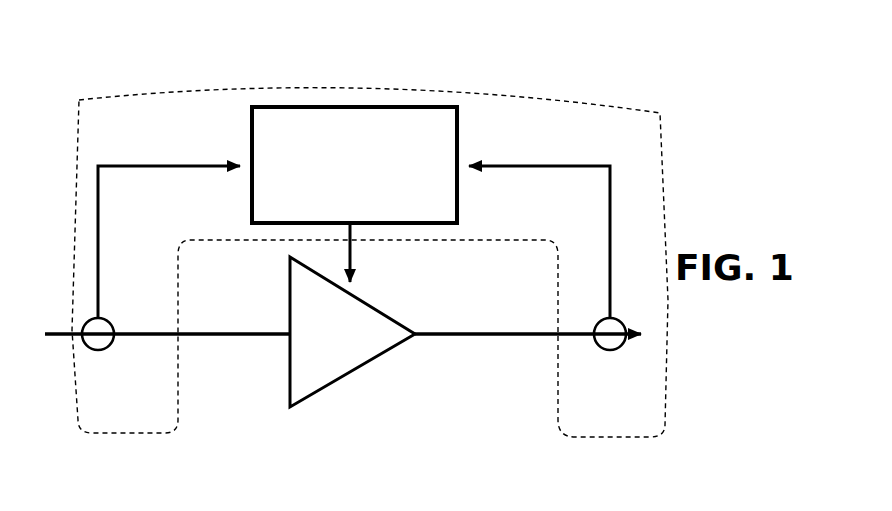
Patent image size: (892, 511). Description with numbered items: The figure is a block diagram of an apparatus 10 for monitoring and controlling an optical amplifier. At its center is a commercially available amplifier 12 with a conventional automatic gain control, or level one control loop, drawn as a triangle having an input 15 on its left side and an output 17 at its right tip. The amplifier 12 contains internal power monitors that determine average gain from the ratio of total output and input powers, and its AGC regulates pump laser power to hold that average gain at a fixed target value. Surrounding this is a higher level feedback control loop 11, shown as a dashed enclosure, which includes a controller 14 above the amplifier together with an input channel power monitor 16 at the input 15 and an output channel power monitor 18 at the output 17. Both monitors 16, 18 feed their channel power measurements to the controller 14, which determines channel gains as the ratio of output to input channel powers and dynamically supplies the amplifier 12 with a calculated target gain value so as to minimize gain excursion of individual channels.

The apparatus for controlling an optical amplifier 10 is at (560, 74).
The higher level feedback control loop 11 is at (163, 94).
The amplifier 12 is at (392, 316).
The controller 14 is at (460, 147).
The input 15 is at (290, 345).
The input channel power monitor 16 is at (98, 350).
The output 17 is at (416, 336).
The output channel power monitor 18 is at (609, 350).